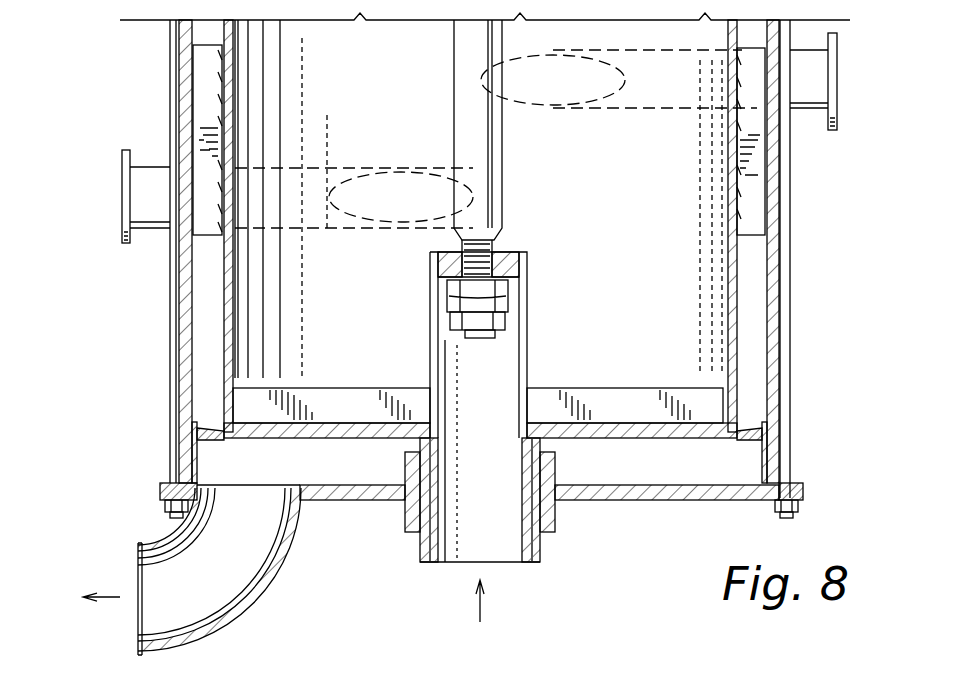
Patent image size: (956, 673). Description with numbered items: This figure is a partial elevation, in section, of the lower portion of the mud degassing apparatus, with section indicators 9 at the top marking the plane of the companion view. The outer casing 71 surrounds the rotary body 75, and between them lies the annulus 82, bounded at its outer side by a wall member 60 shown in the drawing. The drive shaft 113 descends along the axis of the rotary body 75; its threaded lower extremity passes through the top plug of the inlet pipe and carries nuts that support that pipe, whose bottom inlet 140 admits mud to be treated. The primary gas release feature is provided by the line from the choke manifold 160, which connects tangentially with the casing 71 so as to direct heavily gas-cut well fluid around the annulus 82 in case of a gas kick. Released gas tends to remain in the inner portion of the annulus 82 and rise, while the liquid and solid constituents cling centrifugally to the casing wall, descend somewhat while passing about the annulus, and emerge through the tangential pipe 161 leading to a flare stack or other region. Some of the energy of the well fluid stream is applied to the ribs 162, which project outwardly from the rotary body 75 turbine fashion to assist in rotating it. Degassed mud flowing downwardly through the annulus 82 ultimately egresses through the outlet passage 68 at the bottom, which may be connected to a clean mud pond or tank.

The section line 9- 9 is at (102, 78).
The outer vessel wall 60 is at (776, 394).
The outlet passage 68 is at (272, 603).
The casing 71 is at (792, 322).
The rotary body 75 is at (731, 282).
The annulus 82 is at (752, 357).
The drive shaft 113 is at (487, 137).
The bottom inlet 140 is at (497, 542).
The line from the choke manifold 160 is at (808, 97).
The tangential pipe 161 is at (150, 215).
The ribs 162 is at (203, 100).